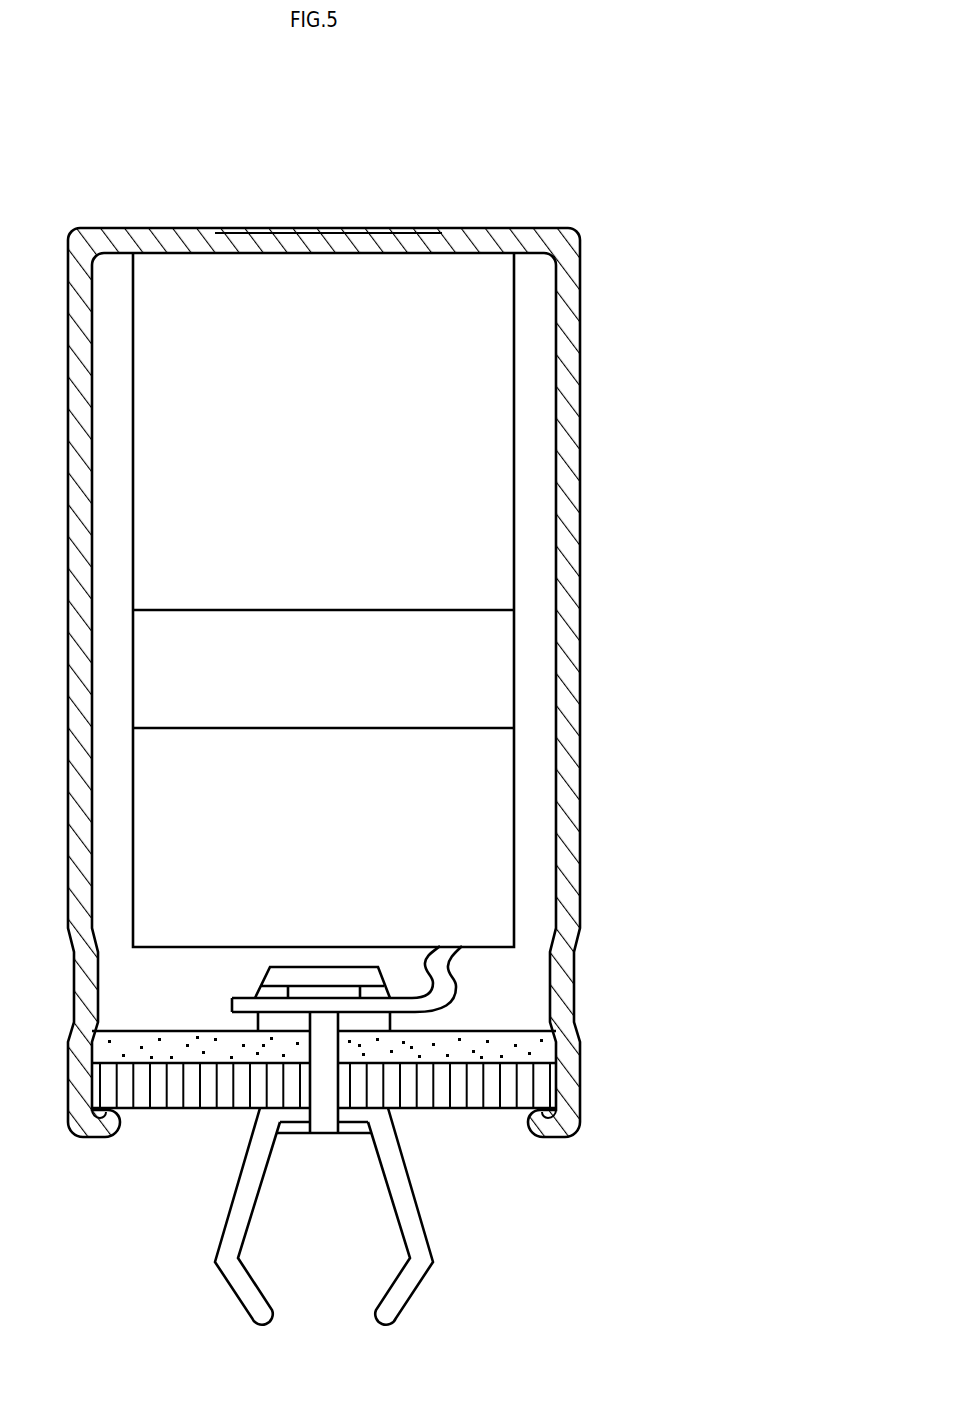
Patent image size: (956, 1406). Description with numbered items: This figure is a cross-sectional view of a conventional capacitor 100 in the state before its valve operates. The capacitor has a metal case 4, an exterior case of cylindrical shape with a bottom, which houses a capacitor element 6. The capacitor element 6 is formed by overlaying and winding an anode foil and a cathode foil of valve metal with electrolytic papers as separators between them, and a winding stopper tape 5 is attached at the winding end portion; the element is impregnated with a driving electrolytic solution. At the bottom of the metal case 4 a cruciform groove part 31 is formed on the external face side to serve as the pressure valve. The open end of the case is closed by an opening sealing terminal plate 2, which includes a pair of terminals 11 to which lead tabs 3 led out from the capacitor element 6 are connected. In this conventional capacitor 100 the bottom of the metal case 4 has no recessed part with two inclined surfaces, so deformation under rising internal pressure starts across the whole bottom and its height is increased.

The conventional capacitor 100 is at (618, 197).
The metal case 4 is at (570, 511).
The cruciform groove part 31 is at (295, 233).
The capacitor element 6 is at (483, 437).
The winding stopper tape 5 is at (462, 668).
The lead tabs 3 is at (443, 987).
The opening sealing terminal plate 2 is at (198, 1090).
The terminals 11 is at (428, 1272).